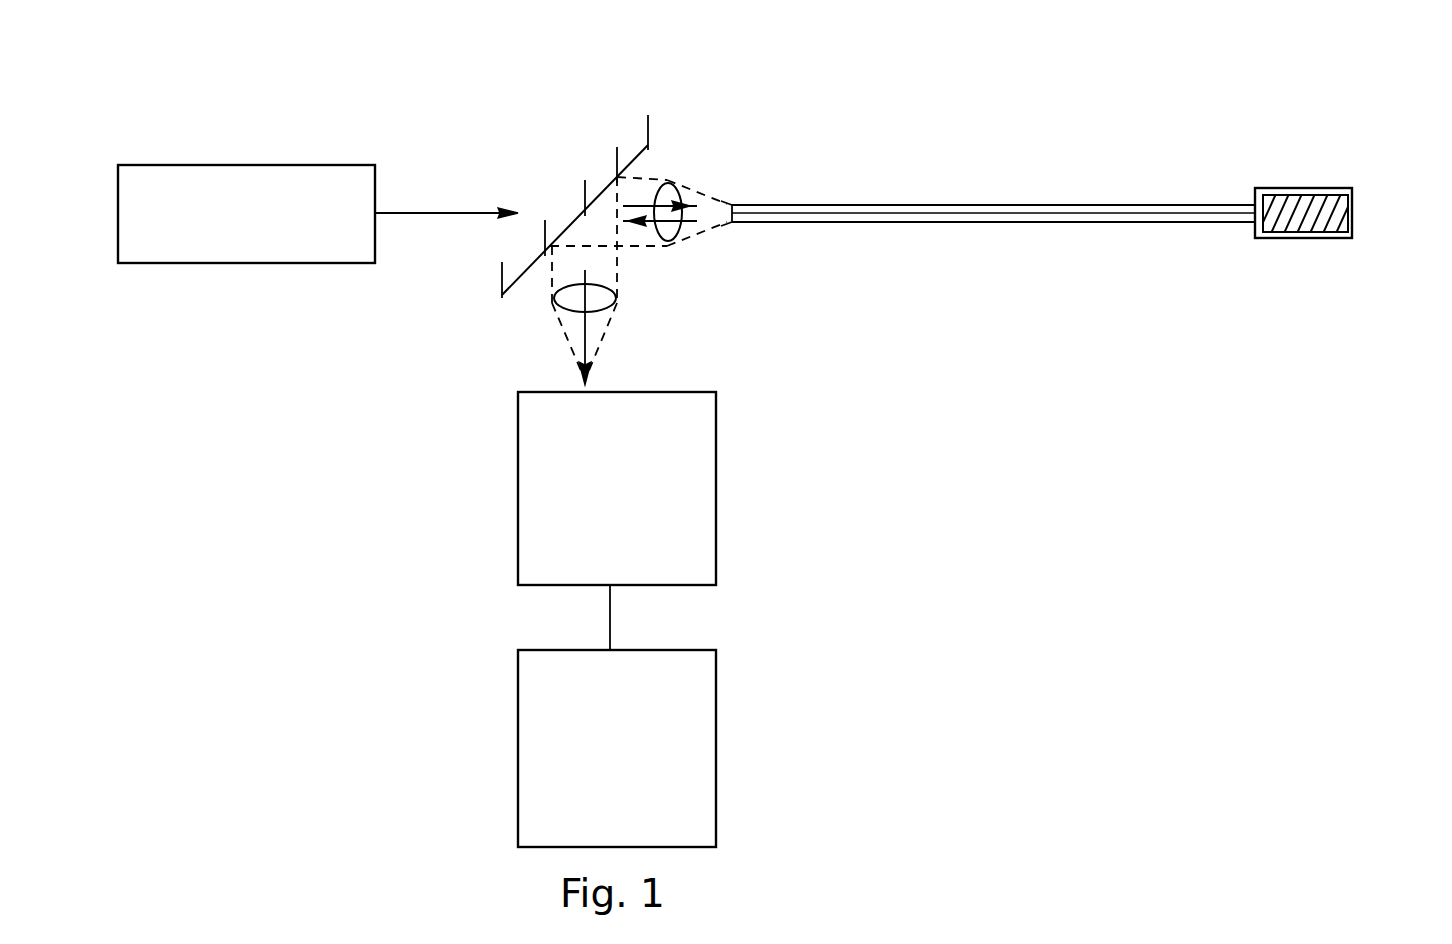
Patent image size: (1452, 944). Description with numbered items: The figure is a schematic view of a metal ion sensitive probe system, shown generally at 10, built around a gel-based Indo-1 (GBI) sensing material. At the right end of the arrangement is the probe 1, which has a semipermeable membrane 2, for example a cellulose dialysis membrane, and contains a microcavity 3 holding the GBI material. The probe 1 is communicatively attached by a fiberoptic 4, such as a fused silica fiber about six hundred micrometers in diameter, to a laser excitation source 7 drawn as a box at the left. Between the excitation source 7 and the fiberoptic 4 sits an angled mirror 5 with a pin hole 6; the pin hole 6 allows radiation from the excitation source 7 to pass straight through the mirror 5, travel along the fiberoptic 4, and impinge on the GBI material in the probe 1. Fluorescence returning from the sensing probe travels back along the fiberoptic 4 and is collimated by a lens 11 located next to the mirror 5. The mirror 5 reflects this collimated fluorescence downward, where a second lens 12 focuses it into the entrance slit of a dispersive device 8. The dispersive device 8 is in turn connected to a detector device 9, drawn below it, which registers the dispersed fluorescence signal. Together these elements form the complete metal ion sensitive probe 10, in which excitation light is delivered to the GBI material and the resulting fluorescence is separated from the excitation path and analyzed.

The probe 1 is at (1292, 193).
The semipermeable membrane 2 is at (1352, 207).
The microcavity 3 is at (1275, 232).
The fiberoptic 4 is at (990, 213).
The mirror 5 is at (650, 132).
The pin hole 6 is at (578, 218).
The excitation source 7 is at (243, 188).
The dispersive device 8 is at (675, 490).
The detector device 9 is at (700, 783).
The metal ion sensitive probe 10 is at (438, 360).
The lens 11 is at (676, 241).
The lens 12 is at (615, 303).